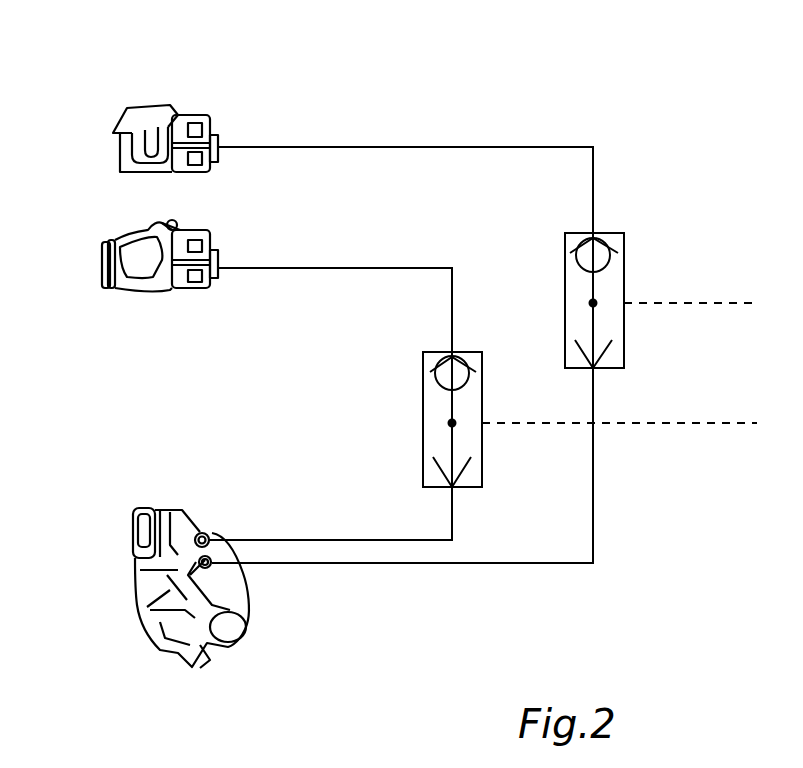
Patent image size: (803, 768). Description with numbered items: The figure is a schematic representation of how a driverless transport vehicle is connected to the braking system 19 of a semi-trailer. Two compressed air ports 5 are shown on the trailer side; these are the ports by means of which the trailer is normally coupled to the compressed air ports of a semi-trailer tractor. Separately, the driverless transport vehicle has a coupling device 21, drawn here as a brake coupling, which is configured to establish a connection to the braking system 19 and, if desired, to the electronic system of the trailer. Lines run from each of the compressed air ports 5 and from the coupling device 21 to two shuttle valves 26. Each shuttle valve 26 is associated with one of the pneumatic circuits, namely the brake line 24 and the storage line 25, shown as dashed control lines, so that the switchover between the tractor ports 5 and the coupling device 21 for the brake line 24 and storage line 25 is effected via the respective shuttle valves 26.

The braking system 19 is at (691, 81).
The compressed air ports 5 is at (118, 148).
The coupling device 21 is at (110, 593).
The brake line 24 is at (733, 303).
The storage line 25 is at (733, 423).
The shuttle valves 26 is at (624, 268).